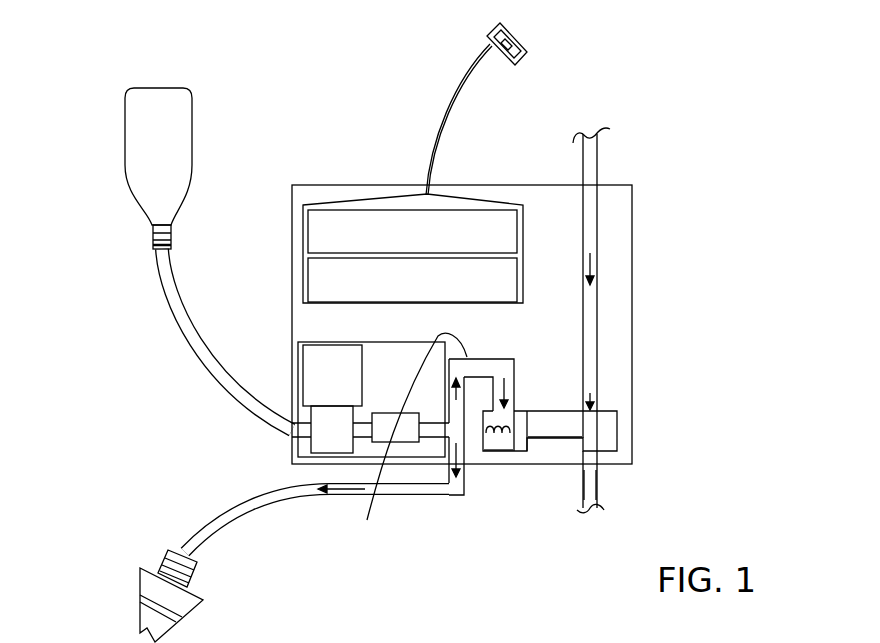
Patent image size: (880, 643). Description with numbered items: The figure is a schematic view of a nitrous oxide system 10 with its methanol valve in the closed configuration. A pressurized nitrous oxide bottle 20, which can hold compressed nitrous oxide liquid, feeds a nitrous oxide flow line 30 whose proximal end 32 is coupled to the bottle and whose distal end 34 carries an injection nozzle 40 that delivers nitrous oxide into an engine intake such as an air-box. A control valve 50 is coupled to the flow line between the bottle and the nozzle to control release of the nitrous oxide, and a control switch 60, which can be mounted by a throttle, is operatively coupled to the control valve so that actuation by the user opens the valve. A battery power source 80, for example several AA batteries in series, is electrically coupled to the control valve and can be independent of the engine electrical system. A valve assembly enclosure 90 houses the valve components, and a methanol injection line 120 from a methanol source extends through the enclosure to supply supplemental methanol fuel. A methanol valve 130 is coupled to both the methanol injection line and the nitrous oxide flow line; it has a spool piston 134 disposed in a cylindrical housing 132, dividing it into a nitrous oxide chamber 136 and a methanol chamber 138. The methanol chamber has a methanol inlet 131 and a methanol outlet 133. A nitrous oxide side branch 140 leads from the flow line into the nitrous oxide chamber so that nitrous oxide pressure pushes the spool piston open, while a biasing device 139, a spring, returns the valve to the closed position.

The nitrous oxide system 10 is at (716, 70).
The nitrous oxide bottle 20 is at (187, 123).
The nitrous oxide flow line 30 is at (160, 278).
The proximal end 32 is at (157, 249).
The distal end 34 is at (180, 548).
The injection nozzle 40 is at (138, 612).
The control valve 50 is at (318, 363).
The control switch 60 is at (520, 37).
The battery power source 80 is at (325, 232).
The valve assembly enclosure 90 is at (632, 244).
The methanol injection line 120 is at (600, 152).
The methanol valve 130 is at (616, 398).
The methanol inlet 131 is at (598, 325).
The cylindrical housing 132 is at (617, 422).
The methanol outlet 133 is at (598, 497).
The spool piston 134 is at (598, 438).
The nitrous oxide chamber 136 is at (505, 445).
The methanol chamber 138 is at (563, 443).
The biasing device 139 is at (500, 443).
The nitrous oxide side branch 140 is at (367, 520).